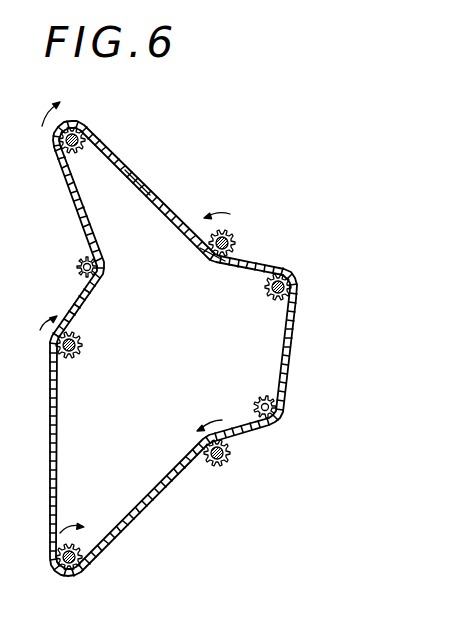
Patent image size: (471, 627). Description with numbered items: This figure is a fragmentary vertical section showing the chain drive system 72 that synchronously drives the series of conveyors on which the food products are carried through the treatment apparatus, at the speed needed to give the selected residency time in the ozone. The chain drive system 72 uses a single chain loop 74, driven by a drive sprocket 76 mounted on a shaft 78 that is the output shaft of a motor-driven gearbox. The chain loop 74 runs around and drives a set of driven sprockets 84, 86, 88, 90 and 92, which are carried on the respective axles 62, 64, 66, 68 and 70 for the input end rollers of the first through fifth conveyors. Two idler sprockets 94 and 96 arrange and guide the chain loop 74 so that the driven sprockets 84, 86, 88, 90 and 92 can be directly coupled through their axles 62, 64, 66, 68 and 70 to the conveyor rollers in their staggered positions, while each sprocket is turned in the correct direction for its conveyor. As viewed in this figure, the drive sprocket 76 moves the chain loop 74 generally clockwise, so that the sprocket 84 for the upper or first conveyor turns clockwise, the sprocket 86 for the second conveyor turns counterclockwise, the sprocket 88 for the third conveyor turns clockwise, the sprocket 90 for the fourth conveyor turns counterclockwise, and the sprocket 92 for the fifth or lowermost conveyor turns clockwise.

The axle 62 is at (84, 128).
The axle 64 is at (209, 258).
The axle 66 is at (71, 360).
The axle 68 is at (232, 452).
The axle 70 is at (68, 577).
The chain drive system 72 is at (146, 156).
The chain loop 74 is at (142, 182).
The drive sprocket 76 is at (267, 298).
The shaft 78 is at (277, 274).
The driven sprocket 84 is at (80, 152).
The driven sprocket 86 is at (236, 224).
The driven sprocket 88 is at (82, 340).
The driven sprocket 90 is at (217, 470).
The driven sprocket 92 is at (80, 538).
The idler sprocket 94 is at (75, 271).
The idler sprocket 96 is at (260, 400).